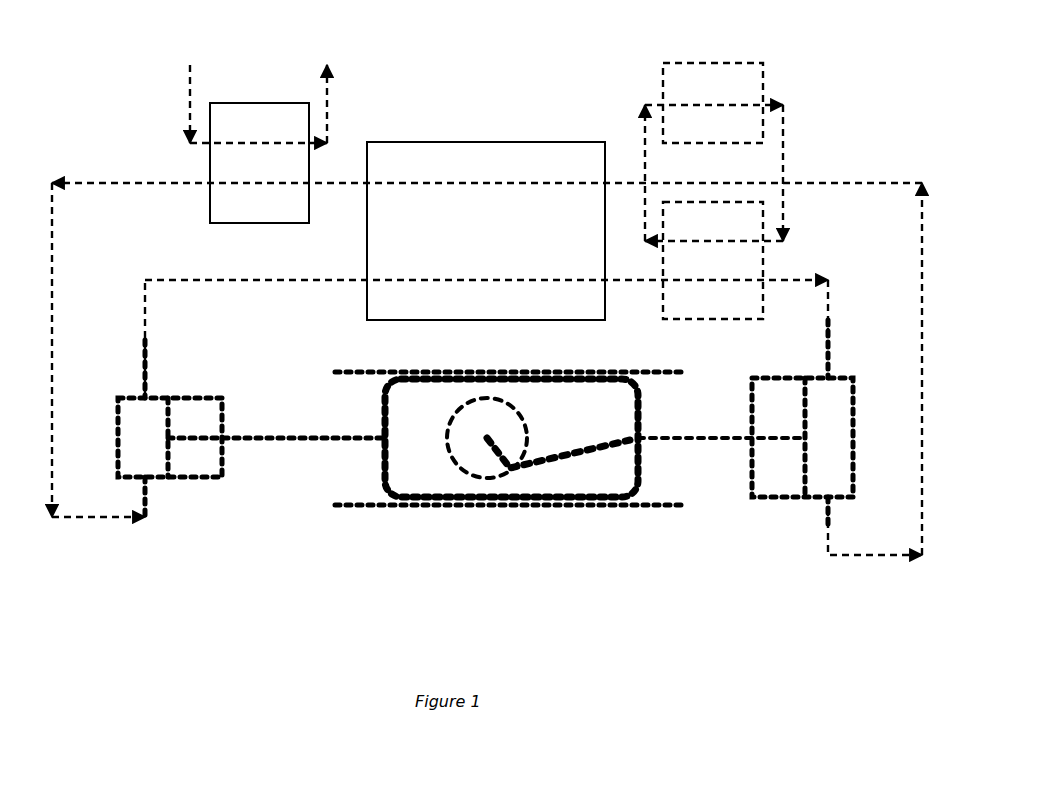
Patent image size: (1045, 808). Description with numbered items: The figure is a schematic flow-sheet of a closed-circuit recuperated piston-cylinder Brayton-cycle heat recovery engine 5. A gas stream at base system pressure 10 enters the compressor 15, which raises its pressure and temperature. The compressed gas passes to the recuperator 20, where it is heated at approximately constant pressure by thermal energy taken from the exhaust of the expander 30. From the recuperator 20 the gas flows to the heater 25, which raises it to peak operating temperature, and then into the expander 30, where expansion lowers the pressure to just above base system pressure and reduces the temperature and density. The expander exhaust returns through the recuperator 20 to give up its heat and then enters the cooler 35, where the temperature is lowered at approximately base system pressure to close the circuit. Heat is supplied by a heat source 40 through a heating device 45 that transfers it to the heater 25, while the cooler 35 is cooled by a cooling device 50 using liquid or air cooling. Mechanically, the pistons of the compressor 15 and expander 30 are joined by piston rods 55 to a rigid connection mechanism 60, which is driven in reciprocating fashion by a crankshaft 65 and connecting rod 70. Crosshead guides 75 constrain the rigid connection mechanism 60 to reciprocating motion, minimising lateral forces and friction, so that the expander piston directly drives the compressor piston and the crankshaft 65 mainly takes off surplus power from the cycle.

The heat recovery engine 5 is at (858, 93).
The gas stream at base system pressure 10 is at (160, 505).
The compressor 15 is at (118, 396).
The recuperator 20 is at (360, 318).
The heater 25 is at (697, 323).
The expander 30 is at (785, 488).
The cooler 35 is at (206, 172).
The heat source 40 is at (662, 88).
The heating device 45 is at (786, 147).
The cooling device 50 is at (188, 100).
The piston rods 55 is at (335, 447).
The rigid connection mechanism 60 is at (385, 510).
The crankshaft 65 is at (497, 478).
The connecting rod 70 is at (578, 458).
The crosshead guides 75 is at (666, 448).